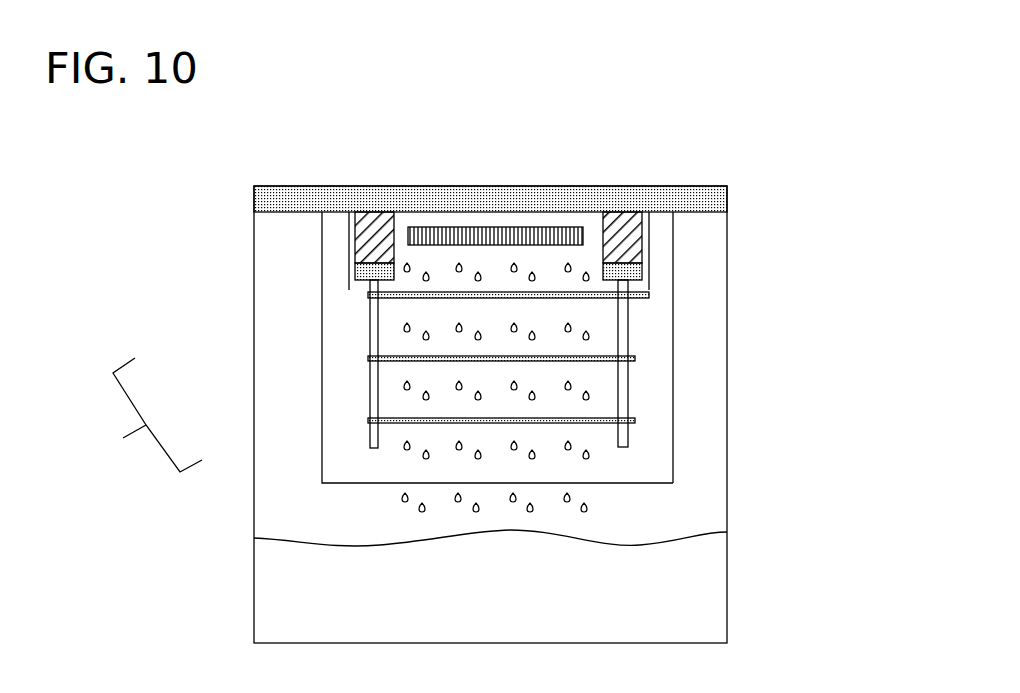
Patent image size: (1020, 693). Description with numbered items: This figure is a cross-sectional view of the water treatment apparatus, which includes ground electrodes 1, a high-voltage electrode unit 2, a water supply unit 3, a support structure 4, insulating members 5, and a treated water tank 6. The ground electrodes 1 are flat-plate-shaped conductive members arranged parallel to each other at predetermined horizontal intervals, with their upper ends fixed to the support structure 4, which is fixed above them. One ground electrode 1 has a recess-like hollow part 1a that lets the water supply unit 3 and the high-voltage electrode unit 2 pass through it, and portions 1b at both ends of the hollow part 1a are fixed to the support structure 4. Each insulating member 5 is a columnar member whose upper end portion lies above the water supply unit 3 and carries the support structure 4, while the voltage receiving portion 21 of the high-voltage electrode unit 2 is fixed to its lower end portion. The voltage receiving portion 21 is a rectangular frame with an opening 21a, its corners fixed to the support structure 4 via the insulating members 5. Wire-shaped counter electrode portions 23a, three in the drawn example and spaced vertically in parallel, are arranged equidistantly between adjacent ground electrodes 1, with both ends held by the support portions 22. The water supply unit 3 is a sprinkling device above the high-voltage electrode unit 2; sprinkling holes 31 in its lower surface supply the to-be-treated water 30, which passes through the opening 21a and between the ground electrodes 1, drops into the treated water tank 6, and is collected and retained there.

The ground electrode 1 is at (658, 458).
The hollow part 1a is at (555, 283).
The portions fixed to the support structure 1b is at (663, 230).
The high-voltage electrode unit 2 is at (120, 464).
The water supply unit 3 is at (475, 226).
The support structure 4 is at (275, 215).
The insulating member 5 is at (644, 243).
The treated water tank 6 is at (254, 583).
The voltage receiving portion 21 is at (358, 282).
The opening 21a is at (428, 268).
The support portion 22 is at (370, 360).
The counter electrode portion 23a is at (396, 422).
The to-be-treated water 30 is at (545, 397).
The sprinkling hole 31 is at (637, 294).